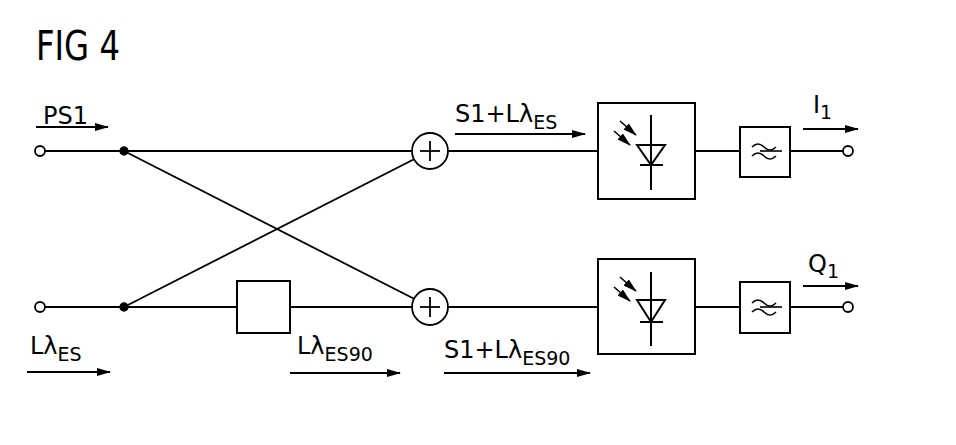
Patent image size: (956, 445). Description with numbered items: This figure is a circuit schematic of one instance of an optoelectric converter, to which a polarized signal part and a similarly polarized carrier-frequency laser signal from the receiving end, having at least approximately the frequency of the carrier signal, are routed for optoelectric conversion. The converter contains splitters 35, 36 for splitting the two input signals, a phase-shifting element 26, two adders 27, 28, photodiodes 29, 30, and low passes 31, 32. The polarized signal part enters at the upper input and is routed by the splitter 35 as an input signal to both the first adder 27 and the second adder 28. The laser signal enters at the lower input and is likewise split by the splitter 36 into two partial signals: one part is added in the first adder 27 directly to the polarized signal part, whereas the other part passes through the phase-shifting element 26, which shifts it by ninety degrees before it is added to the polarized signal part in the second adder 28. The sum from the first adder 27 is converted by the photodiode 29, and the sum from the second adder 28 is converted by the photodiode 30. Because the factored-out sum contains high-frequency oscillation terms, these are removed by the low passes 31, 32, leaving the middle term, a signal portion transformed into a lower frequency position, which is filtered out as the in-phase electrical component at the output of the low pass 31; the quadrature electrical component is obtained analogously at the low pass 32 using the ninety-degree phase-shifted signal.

The phase-shifting element 26 is at (263, 335).
The first adder 27 is at (428, 132).
The second adder 28 is at (428, 288).
The photodiode 29 is at (647, 102).
The photodiode 30 is at (647, 355).
The low pass 31 is at (765, 126).
The low pass 32 is at (765, 281).
The splitter 35 is at (124, 148).
The splitter 36 is at (124, 304).